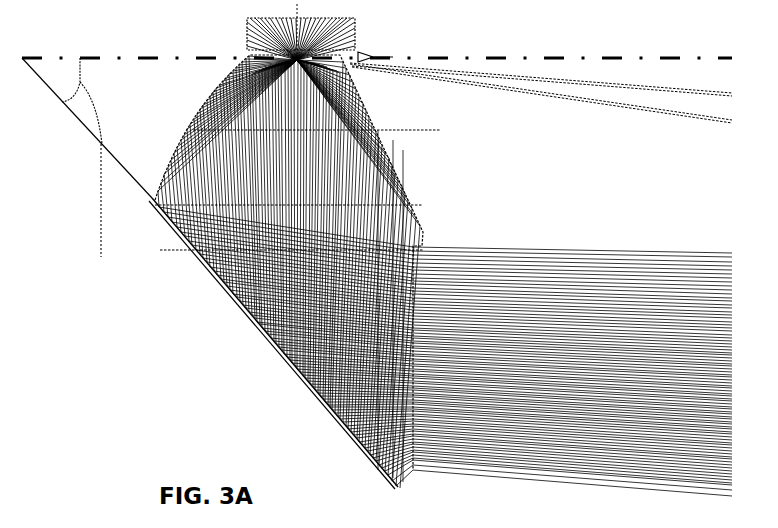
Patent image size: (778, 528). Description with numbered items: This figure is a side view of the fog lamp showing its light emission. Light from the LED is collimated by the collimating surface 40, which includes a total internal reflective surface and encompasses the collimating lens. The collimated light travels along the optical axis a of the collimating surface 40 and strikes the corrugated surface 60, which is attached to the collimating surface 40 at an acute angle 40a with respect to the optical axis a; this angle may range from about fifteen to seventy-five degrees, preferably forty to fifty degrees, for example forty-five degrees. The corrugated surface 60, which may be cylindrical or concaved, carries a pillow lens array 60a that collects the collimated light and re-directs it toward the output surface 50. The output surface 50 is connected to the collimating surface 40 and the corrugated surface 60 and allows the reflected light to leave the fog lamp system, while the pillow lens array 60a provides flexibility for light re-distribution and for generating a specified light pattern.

The collimating surface 40 is at (170, 160).
The acute angle 40a is at (111, 215).
The output surface 50 is at (417, 265).
The corrugated surface 60 is at (152, 198).
The pillow lens array 60a is at (300, 373).
The optical axis a is at (482, 62).